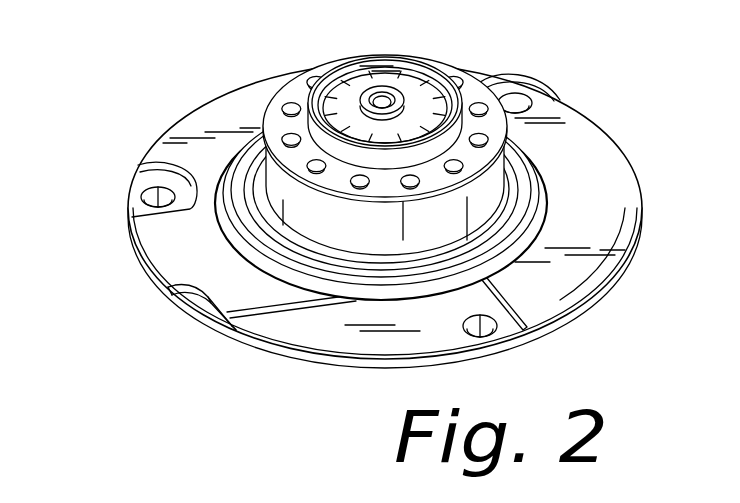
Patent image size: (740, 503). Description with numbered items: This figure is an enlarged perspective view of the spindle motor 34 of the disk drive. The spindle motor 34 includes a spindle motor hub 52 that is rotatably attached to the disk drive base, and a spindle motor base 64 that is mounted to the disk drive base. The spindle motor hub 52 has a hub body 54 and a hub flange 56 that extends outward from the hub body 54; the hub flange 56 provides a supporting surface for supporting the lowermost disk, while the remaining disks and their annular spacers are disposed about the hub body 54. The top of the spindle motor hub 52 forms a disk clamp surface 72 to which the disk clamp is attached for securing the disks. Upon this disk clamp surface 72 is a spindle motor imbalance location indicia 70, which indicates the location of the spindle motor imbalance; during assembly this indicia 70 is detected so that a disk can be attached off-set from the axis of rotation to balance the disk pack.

The spindle motor 34 is at (149, 104).
The spindle motor hub 52 is at (277, 193).
The hub body 54 is at (382, 236).
The hub flange 56 is at (537, 223).
The spindle motor base 64 is at (226, 100).
The spindle motor imbalance location indicia 70 is at (385, 183).
The disk clamp surface 72 is at (473, 93).